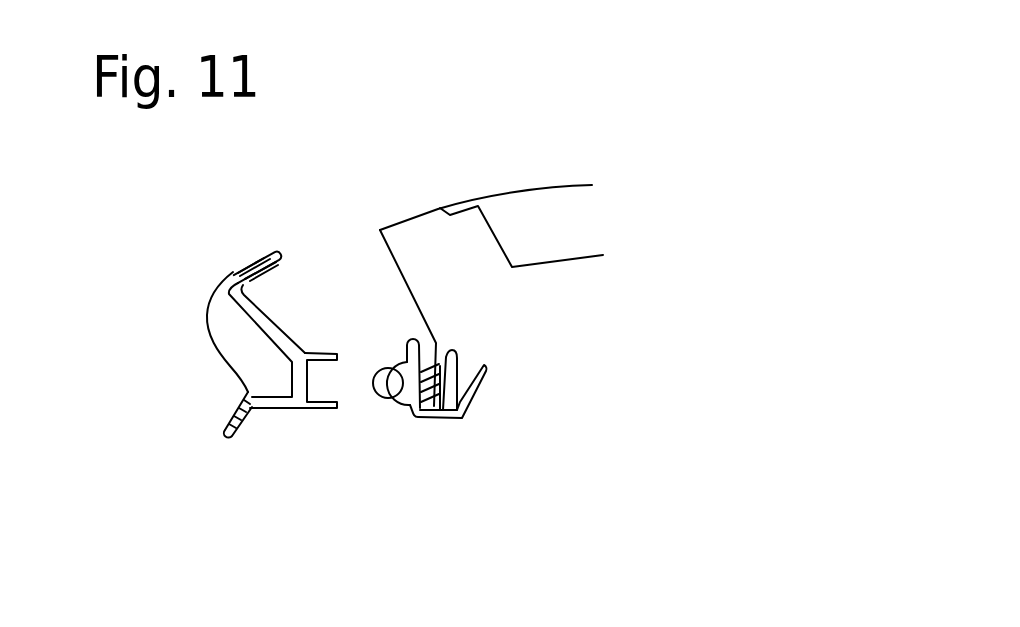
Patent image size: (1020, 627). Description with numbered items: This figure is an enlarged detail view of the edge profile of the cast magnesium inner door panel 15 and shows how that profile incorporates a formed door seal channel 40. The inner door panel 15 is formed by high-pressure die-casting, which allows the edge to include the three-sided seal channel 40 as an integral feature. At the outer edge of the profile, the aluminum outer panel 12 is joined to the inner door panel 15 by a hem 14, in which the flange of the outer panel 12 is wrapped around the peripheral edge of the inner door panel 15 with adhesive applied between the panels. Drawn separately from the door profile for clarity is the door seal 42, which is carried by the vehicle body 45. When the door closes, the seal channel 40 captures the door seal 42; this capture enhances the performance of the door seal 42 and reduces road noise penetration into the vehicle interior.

The outer panel 12 is at (222, 357).
The hem 14 is at (278, 253).
The inner door panel 15 is at (276, 410).
The door seal channel 40 is at (327, 355).
The door seal 42 is at (392, 405).
The vehicle body 45 is at (512, 267).